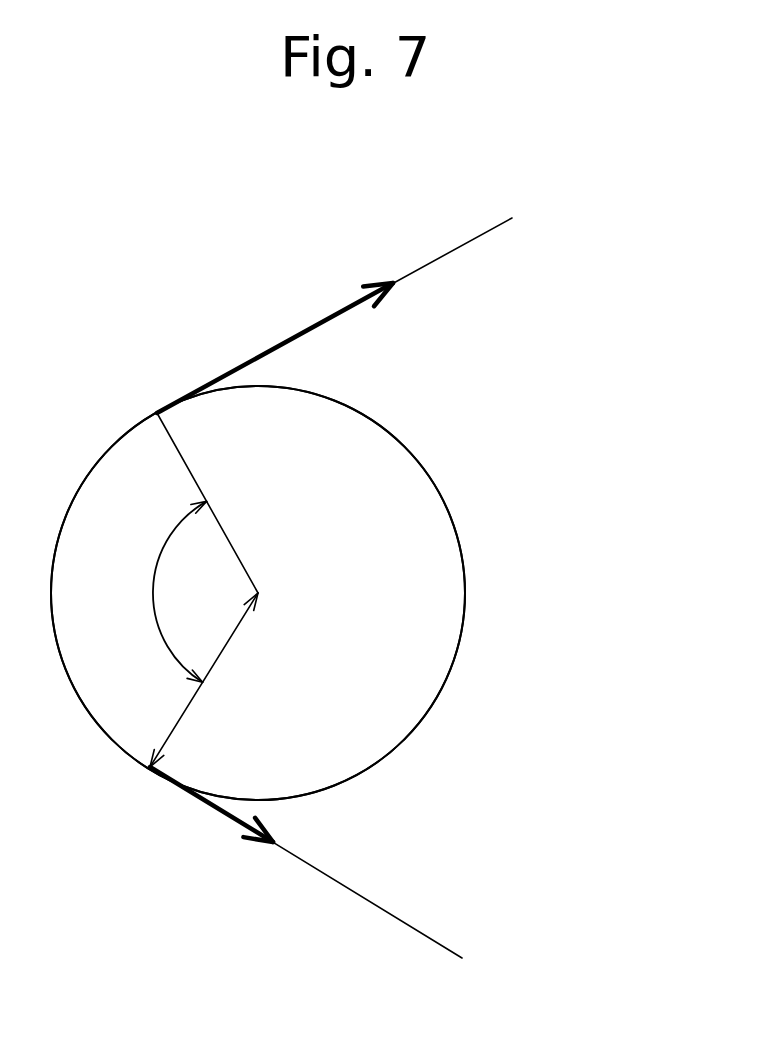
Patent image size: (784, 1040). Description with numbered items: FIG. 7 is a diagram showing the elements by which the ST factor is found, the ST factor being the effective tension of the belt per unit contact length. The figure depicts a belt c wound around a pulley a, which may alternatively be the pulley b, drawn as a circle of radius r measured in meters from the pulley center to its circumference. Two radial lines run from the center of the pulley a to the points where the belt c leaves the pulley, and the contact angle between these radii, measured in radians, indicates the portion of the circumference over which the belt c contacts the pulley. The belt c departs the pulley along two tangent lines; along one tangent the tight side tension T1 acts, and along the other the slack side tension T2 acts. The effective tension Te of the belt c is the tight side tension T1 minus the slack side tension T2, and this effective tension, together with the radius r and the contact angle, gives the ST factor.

The pulley a is at (465, 600).
The pulley b is at (258, 593).
The belt c is at (432, 262).
The tight side tension T1 is at (275, 348).
The slack side tension T2 is at (306, 862).
The radius r is at (204, 590).